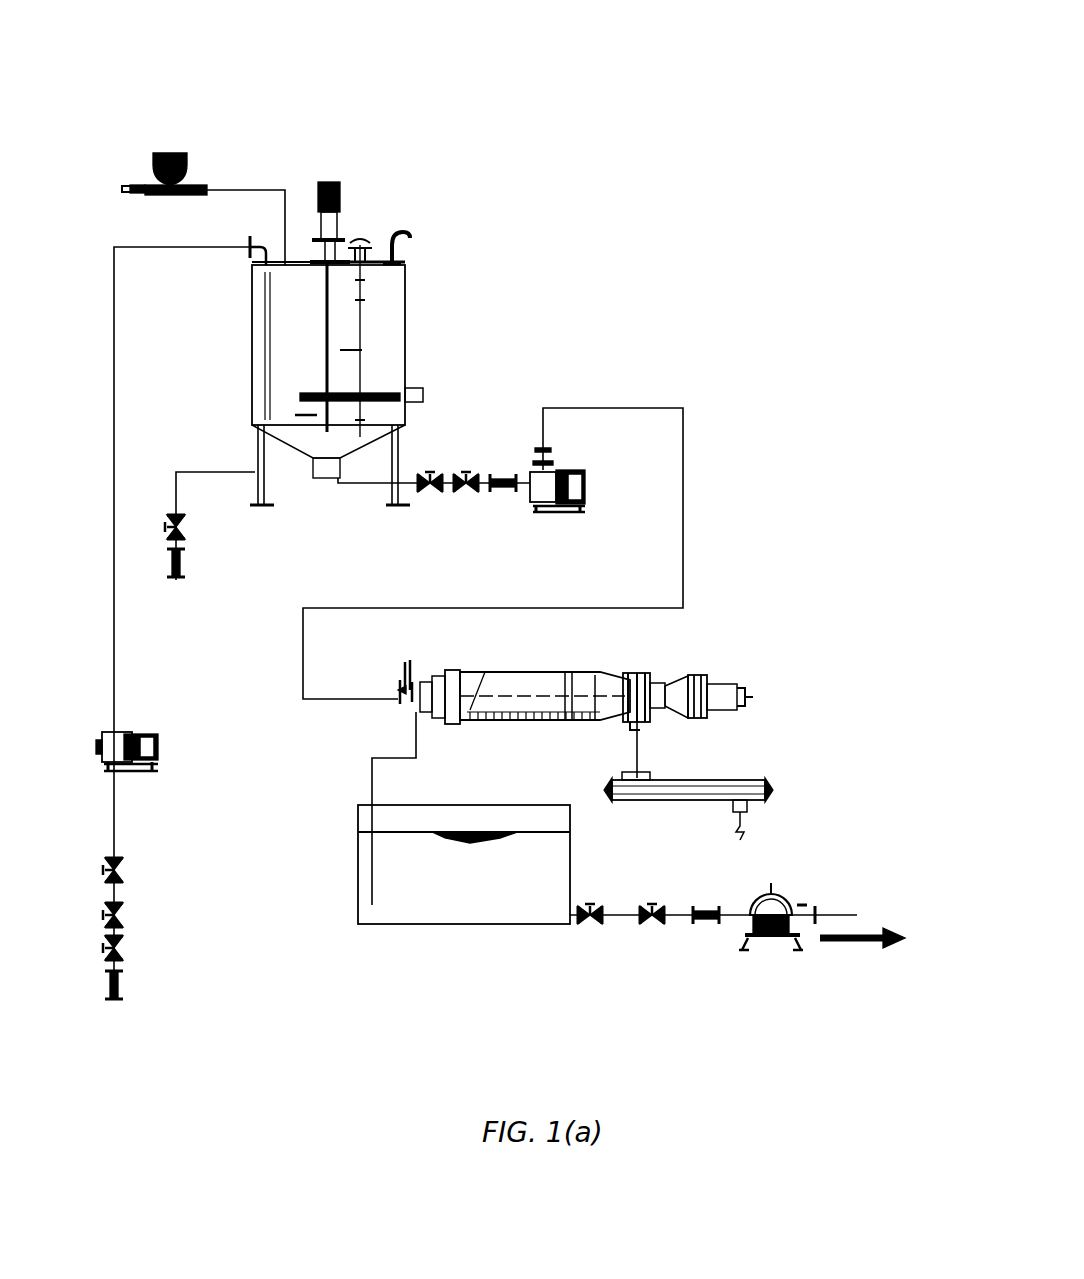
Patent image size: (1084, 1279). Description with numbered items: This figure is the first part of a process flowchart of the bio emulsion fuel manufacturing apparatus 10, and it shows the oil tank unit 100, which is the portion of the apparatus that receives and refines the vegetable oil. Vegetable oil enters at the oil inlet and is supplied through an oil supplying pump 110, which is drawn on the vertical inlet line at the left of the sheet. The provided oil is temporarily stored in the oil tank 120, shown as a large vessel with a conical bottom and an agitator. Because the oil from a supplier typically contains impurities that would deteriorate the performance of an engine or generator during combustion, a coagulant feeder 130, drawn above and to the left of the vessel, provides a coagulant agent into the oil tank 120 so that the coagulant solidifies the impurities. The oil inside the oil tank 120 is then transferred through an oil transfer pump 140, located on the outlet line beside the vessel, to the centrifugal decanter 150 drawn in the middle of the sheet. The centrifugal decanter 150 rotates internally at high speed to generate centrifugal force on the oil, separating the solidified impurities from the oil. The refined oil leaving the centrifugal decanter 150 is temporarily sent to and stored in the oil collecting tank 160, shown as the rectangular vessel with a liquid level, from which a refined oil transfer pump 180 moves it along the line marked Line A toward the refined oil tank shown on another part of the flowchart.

The bio emulsion fuel manufacturing apparatus 10 is at (559, 31).
The oil tank unit 100 is at (660, 192).
The oil supplying pump 110 is at (132, 735).
The oil tank 120 is at (412, 332).
The coagulant feeder 130 is at (180, 155).
The oil transfer pump 140 is at (567, 508).
The centrifugal decanter 150 is at (678, 690).
The oil collecting tank 160 is at (450, 922).
The refined oil transfer pump 180 is at (770, 943).